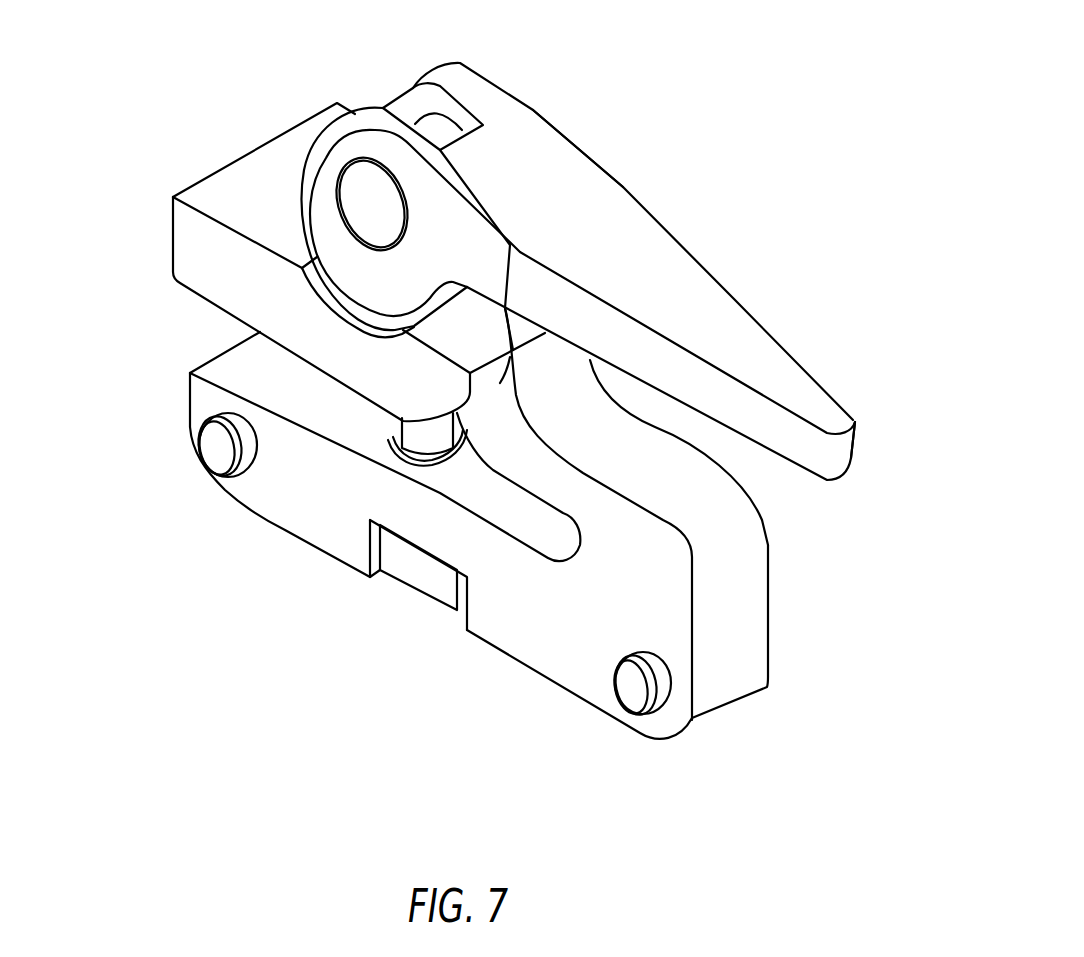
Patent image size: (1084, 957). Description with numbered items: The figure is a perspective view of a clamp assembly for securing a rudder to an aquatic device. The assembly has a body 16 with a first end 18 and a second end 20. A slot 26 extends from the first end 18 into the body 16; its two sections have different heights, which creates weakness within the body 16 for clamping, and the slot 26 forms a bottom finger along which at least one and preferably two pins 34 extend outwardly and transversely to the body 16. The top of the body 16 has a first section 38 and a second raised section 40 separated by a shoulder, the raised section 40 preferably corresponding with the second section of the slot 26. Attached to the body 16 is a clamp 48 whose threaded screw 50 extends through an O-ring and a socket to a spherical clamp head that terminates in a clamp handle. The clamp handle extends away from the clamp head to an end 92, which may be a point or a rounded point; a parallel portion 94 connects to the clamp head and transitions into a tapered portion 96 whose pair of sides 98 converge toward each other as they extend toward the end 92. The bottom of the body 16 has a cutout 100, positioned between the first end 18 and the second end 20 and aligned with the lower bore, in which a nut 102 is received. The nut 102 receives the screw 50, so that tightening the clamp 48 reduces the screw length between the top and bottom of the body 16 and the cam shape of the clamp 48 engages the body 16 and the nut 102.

The body 16 is at (812, 582).
The first end 18 is at (190, 410).
The second end 20 is at (730, 627).
The slot 26 is at (220, 333).
The pins 34 is at (633, 693).
The first section 38 is at (627, 463).
The raised section 40 is at (173, 236).
The clamp 48 is at (712, 114).
The screw 50 is at (415, 435).
The end 92 is at (843, 455).
The parallel portion 94 is at (533, 110).
The tapered portion 96 is at (740, 323).
The sides 98 is at (743, 420).
The cutout 100 is at (372, 547).
The nut 102 is at (418, 568).